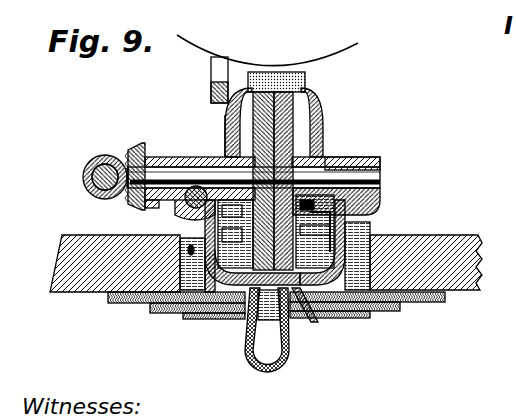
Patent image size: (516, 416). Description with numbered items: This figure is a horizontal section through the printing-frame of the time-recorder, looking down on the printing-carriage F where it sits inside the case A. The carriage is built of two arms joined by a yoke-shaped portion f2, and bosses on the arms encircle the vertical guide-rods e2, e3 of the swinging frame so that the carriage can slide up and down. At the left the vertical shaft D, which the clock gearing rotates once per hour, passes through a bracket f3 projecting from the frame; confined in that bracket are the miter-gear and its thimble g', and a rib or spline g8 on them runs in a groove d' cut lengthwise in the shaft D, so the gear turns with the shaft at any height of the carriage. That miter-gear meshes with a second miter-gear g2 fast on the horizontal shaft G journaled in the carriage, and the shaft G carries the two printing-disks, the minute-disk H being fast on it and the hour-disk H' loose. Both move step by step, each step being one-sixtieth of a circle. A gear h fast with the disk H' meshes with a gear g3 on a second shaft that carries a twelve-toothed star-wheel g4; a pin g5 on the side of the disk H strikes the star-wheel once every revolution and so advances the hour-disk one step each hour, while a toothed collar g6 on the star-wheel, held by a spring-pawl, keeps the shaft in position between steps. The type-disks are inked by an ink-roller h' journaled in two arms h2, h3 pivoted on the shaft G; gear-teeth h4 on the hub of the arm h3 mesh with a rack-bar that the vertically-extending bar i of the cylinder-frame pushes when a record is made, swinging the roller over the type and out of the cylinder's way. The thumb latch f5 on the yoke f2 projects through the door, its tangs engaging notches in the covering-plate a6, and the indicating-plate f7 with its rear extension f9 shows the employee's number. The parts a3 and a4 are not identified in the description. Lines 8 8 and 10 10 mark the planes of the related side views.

The section line 10 10 is at (218, 54).
The section line 8 8 is at (329, 150).
The vertically-extending bar i is at (211, 86).
The ink-roller h' is at (276, 67).
The arm h2 is at (308, 95).
The arm h3 is at (230, 109).
The gear h is at (193, 176).
The gear-teeth h4 is at (214, 291).
The printing-disk H is at (309, 181).
The printing-disk H' is at (320, 181).
The printing-carriage F is at (378, 157).
The shaft G is at (382, 185).
The guide-rod e2 is at (252, 136).
The guide-rod e3 is at (372, 201).
The thimble g' is at (85, 197).
The miter-gear g2 is at (137, 148).
The gear g3 is at (236, 292).
The star-wheel g4 is at (330, 276).
The pin g5 is at (364, 219).
The toothed collar g6 is at (372, 305).
The rib or spline g8 is at (103, 200).
The inclosing frame or case A is at (275, 263).
The base plate a3 is at (150, 308).
The base plate step a4 is at (468, 302).
The covering-plate a6 is at (432, 303).
The yoke-shaped portion f2 is at (301, 292).
The bracket f3 is at (140, 204).
The thumb spring or latch f5 is at (265, 373).
The indicating-plate f7 is at (212, 310).
The extension of reduced portion f9 is at (180, 305).
The shaft D is at (96, 178).
The groove d' is at (88, 160).